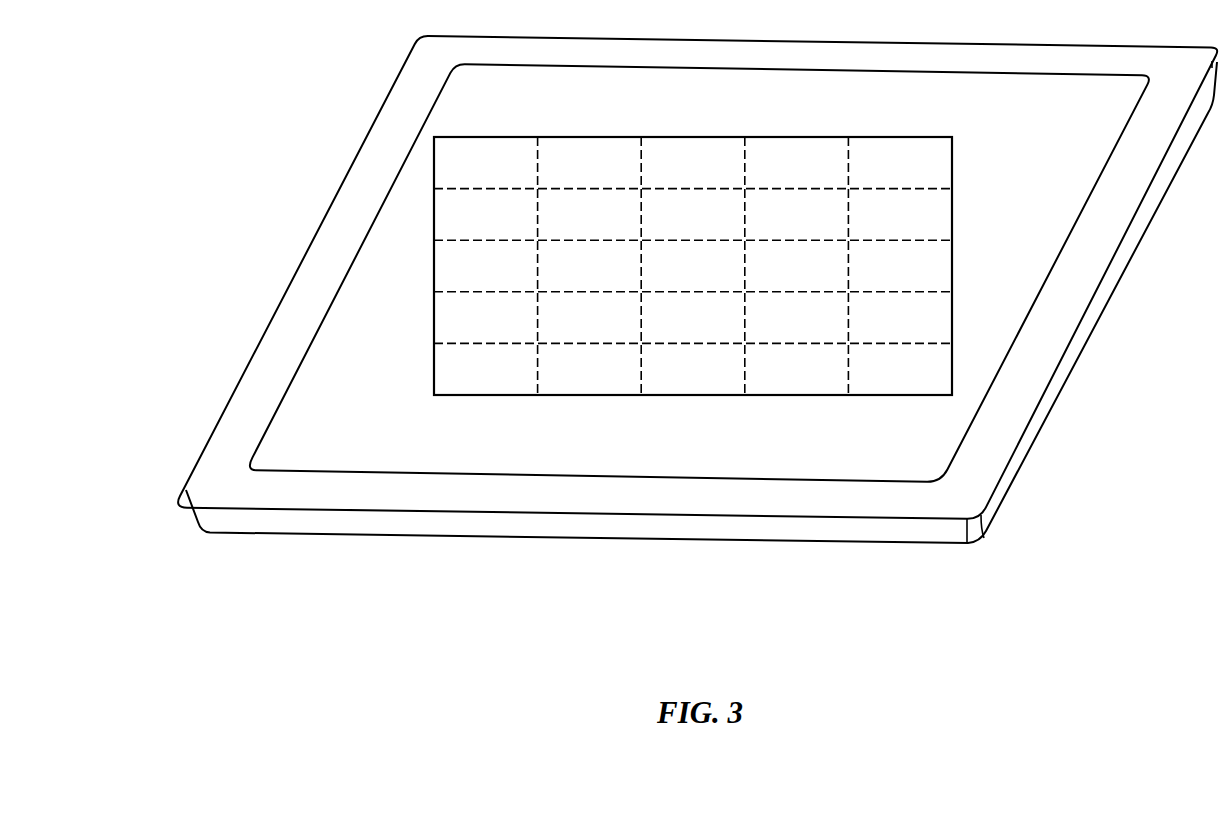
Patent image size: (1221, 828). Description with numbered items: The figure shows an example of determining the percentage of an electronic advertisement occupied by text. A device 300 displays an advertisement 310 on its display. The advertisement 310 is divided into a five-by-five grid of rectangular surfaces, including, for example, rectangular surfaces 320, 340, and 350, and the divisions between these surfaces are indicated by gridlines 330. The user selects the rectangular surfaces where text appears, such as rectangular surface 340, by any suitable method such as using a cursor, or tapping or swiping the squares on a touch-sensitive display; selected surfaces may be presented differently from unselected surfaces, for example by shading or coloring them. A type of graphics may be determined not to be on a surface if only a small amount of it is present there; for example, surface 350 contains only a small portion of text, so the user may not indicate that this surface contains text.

The device 300 is at (283, 300).
The advertisement 310 is at (433, 395).
The rectangular surface 320 is at (678, 354).
The gridlines 330 is at (537, 353).
The rectangular surface 340 is at (553, 285).
The surface 350 is at (880, 283).